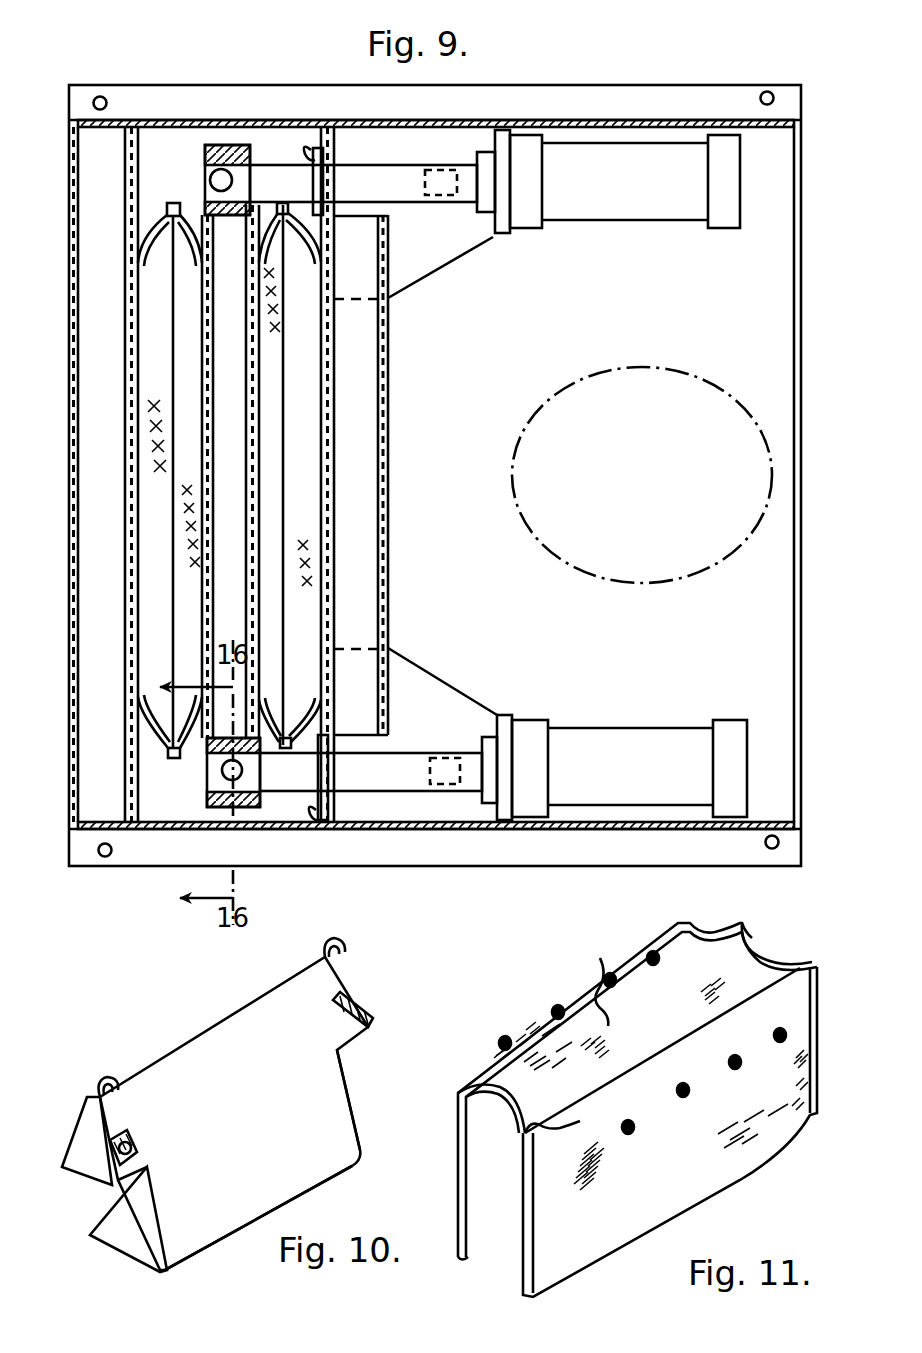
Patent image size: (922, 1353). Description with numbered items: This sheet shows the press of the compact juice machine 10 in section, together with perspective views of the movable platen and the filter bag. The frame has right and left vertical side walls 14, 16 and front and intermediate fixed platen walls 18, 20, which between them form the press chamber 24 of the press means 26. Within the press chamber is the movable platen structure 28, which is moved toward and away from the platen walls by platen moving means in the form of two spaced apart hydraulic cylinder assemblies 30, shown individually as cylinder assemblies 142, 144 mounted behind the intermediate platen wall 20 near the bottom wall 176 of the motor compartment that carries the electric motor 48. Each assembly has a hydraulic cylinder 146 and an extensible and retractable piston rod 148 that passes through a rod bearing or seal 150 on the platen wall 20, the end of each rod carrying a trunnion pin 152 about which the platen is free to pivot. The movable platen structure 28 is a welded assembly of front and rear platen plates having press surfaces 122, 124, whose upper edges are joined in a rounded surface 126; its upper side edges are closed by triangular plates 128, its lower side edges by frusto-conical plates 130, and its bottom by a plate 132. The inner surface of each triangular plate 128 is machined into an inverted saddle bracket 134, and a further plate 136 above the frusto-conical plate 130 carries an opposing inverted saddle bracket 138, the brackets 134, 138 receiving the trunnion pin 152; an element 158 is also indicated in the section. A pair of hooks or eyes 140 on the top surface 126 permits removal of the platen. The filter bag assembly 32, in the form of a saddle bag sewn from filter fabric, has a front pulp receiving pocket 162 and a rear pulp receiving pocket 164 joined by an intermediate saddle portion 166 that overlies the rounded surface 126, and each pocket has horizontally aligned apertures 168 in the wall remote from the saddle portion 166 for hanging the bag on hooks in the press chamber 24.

In FIG. 9, the compact juice machine 10 is at (742, 74).
In FIG. 9, the right vertical side wall 14 is at (428, 830).
In FIG. 9, the left vertical side wall 16 is at (621, 118).
In FIG. 9, the front fixed platen wall 18 is at (125, 422).
In FIG. 9, the intermediate fixed platen wall 20 is at (330, 351).
In FIG. 9, the press chamber 24 is at (178, 155).
In FIG. 9, the press means 26 is at (105, 585).
In FIG. 9, the movable platen structure 28 is at (234, 123).
In FIG. 10, the movable platen structure 28 is at (192, 1010).
In FIG. 9, the hydraulic cylinder assemblies 30 is at (520, 338).
In FIG. 9, the filter bag assembly 32 is at (130, 215).
In FIG. 11, the filter bag assembly 32 is at (775, 950).
In FIG. 9, the electric motor 48 is at (652, 364).
In FIG. 9, the front platen plate press surface 122 is at (258, 385).
In FIG. 10, the front platen plate press surface 122 is at (304, 1116).
In FIG. 9, the rear platen plate press surface 124 is at (194, 361).
In FIG. 10, the rear platen plate press surface 124 is at (98, 1195).
In FIG. 10, the rounded upper surface 126 is at (146, 1070).
In FIG. 9, the triangular plates 128 is at (252, 120).
In FIG. 10, the triangular plates 128 is at (70, 1132).
In FIG. 9, the frusto-conical plates 130 is at (204, 226).
In FIG. 10, the frusto-conical plates 130 is at (100, 1220).
In FIG. 9, the bottom plate 132 is at (228, 450).
In FIG. 10, the bottom plate 132 is at (296, 1200).
In FIG. 9, the inverted saddle bracket 134 is at (210, 134).
In FIG. 10, the inverted saddle bracket 134 is at (370, 1016).
In FIG. 10, the plate 136 is at (133, 1136).
In FIG. 9, the inverted saddle bracket 138 is at (212, 194).
In FIG. 10, the inverted saddle bracket 138 is at (134, 1152).
In FIG. 10, the hooks or eyes 140 is at (315, 946).
In FIG. 9, the hydraulic cylinder assembly 142 is at (656, 716).
In FIG. 9, the hydraulic cylinder assembly 144 is at (585, 228).
In FIG. 9, the hydraulic cylinder 146 is at (646, 194).
In FIG. 9, the piston rod 148 is at (400, 195).
In FIG. 9, the rod bearing or seal 150 is at (325, 146).
In FIG. 9, the trunnion pin 152 is at (240, 179).
In FIG. 9, the pivot connection 158 is at (210, 781).
In FIG. 9, the front pulp receiving pocket 162 is at (316, 328).
In FIG. 11, the front pulp receiving pocket 162 is at (712, 1197).
In FIG. 9, the rear pulp receiving pocket 164 is at (148, 330).
In FIG. 11, the rear pulp receiving pocket 164 is at (560, 1015).
In FIG. 11, the intermediate saddle portion 166 is at (628, 966).
In FIG. 11, the apertures 168 is at (522, 1032).
In FIG. 9, the bottom wall of the motor compartment 176 is at (608, 334).